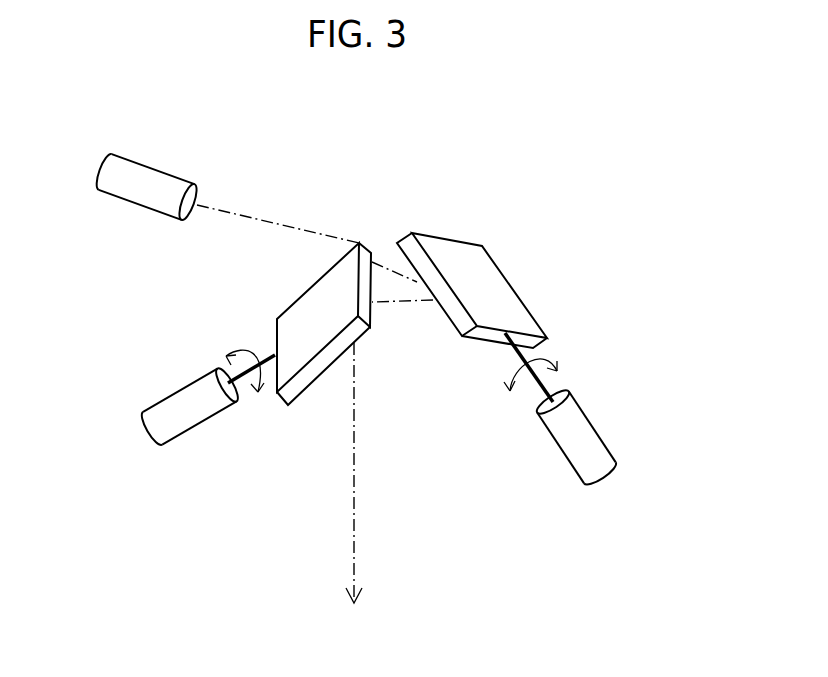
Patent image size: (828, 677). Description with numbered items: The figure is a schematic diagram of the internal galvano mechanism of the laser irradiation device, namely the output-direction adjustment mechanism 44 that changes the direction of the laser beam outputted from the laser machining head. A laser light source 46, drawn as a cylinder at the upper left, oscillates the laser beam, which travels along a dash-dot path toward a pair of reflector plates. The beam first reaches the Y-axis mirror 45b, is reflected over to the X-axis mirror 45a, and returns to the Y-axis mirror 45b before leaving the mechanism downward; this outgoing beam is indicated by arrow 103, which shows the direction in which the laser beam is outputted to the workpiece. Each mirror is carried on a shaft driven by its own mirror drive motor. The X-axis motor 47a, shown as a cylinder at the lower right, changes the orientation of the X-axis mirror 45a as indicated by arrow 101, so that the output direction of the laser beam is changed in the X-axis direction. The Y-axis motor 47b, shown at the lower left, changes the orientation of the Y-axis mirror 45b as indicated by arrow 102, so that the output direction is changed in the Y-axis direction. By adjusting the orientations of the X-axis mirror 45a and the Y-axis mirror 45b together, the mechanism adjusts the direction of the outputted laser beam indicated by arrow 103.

The output-direction adjustment mechanism 44 is at (478, 221).
The X-axis mirror 45a is at (488, 287).
The Y-axis mirror 45b is at (328, 303).
The laser light source 46 is at (140, 173).
The X-axis motor 47a is at (582, 443).
The Y-axis motor 47b is at (180, 403).
The arrow 101 is at (538, 356).
The arrow 102 is at (250, 347).
The arrow 103 is at (353, 498).